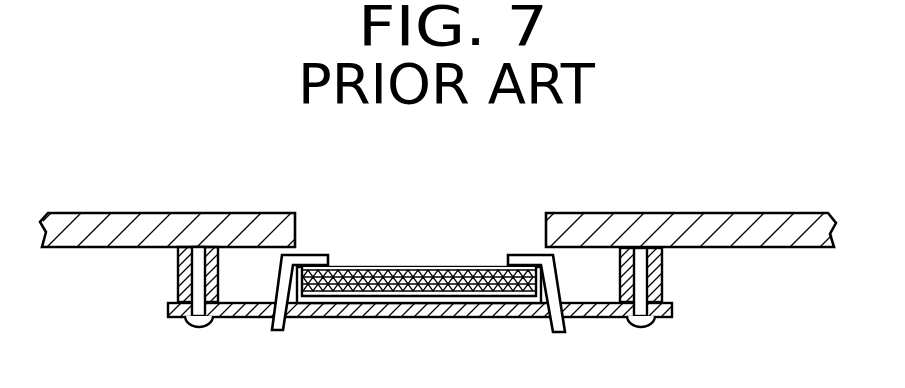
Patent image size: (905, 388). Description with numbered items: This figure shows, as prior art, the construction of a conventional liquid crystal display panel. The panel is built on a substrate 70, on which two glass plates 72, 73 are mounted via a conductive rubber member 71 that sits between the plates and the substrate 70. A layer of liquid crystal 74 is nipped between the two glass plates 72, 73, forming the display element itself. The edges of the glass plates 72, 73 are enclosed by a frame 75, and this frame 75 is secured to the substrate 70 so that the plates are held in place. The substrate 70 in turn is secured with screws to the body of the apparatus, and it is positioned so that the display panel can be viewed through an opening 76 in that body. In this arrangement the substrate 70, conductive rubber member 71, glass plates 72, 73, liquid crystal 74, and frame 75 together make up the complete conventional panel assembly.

The substrate 70 is at (424, 307).
The conductive rubber member 71 is at (312, 296).
The glass plate 72 is at (371, 270).
The glass plate 73 is at (480, 288).
The layer of liquid crystal 74 is at (423, 279).
The frame 75 is at (319, 254).
The opening 76 is at (546, 234).